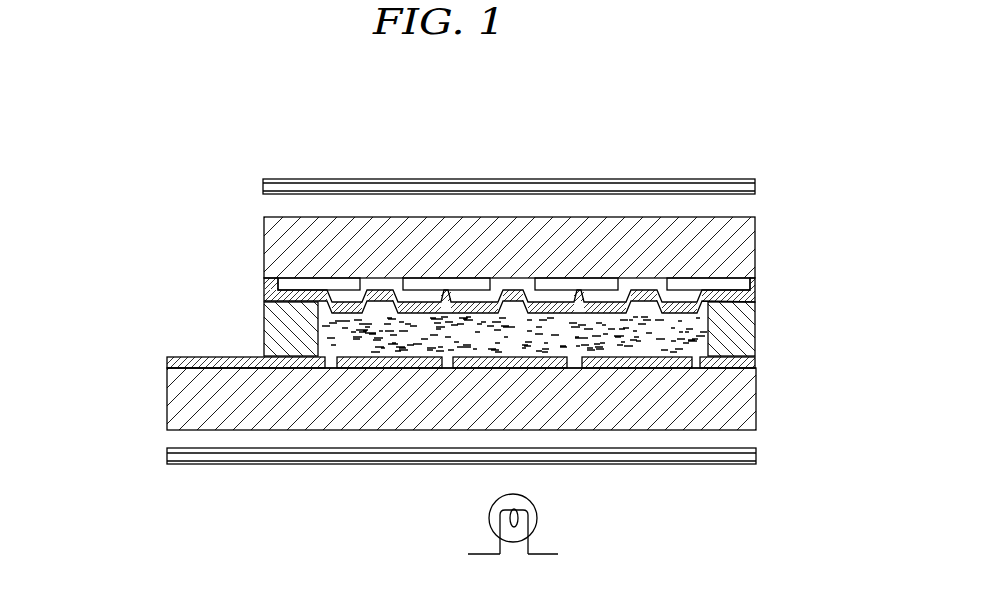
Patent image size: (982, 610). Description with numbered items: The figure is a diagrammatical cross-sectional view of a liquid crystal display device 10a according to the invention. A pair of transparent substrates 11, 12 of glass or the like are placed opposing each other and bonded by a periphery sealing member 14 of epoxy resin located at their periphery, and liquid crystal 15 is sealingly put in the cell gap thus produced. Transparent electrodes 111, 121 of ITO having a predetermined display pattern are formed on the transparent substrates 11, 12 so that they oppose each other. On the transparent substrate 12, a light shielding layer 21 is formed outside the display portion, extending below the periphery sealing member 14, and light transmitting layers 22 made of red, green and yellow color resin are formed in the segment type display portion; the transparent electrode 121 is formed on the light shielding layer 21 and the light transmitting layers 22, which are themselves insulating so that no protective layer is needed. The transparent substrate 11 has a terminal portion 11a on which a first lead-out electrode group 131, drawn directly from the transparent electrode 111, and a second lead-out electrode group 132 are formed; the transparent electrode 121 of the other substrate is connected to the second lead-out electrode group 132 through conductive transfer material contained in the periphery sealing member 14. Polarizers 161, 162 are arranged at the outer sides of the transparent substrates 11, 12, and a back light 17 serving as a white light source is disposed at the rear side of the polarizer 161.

The liquid crystal display device 10a is at (765, 203).
The transparent substrate 11 is at (757, 415).
The terminal portion 11a is at (178, 404).
The transparent electrode 111 is at (758, 362).
The transparent substrate 12 is at (745, 247).
The transparent electrode 121 is at (762, 289).
The first lead-out electrode group 131 is at (167, 363).
The second lead-out electrode group 132 is at (514, 362).
The periphery sealing member 14 is at (264, 322).
The liquid crystal 15 is at (693, 340).
The polarizer 161 is at (366, 463).
The polarizer 162 is at (300, 178).
The back light 17 is at (539, 516).
The light shielding layer 21 is at (278, 283).
The light transmitting layers 22 is at (640, 280).